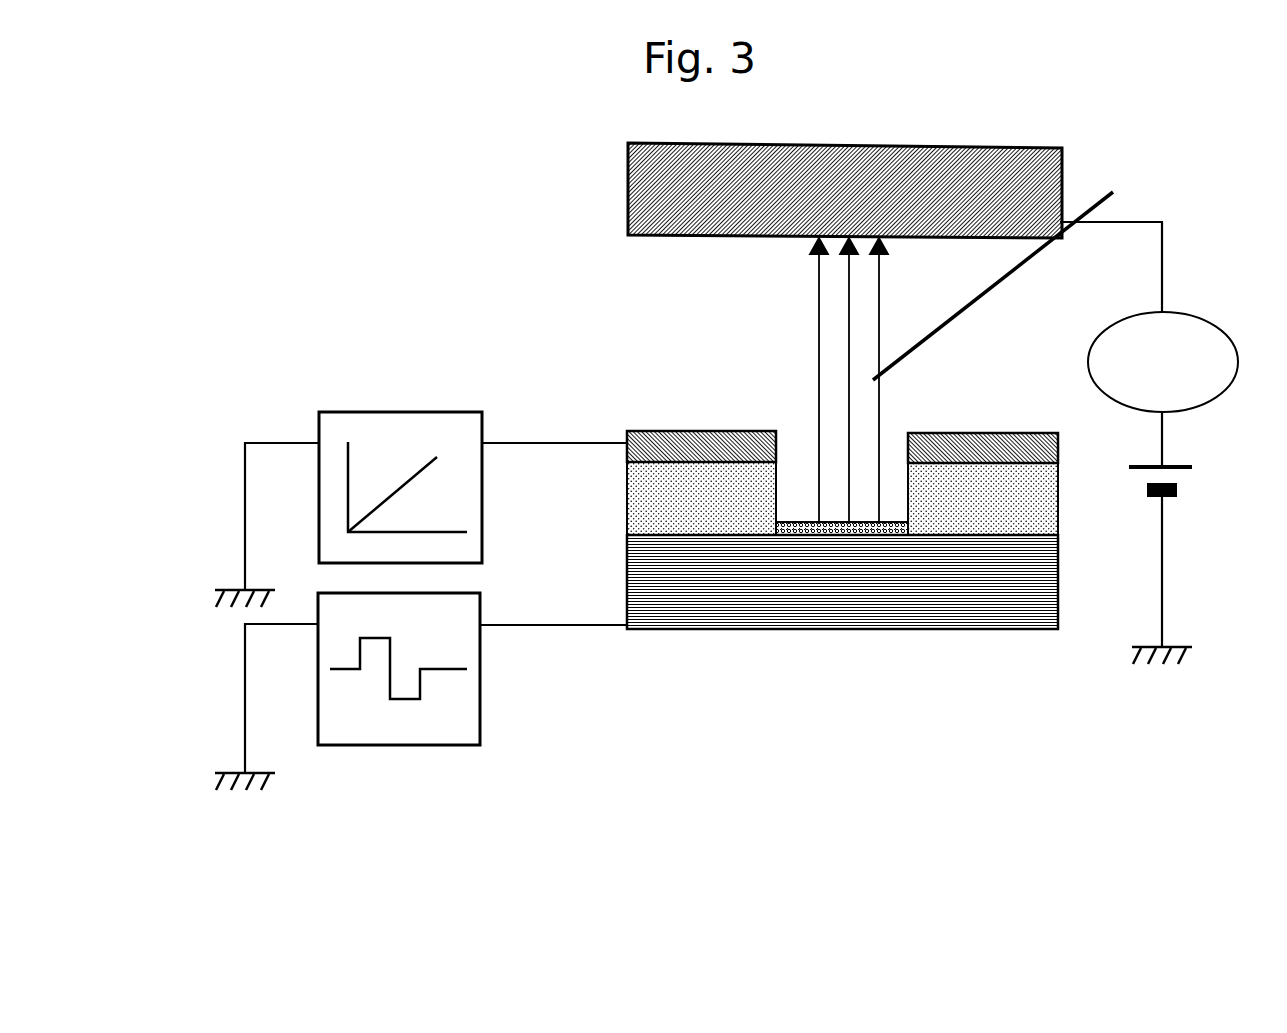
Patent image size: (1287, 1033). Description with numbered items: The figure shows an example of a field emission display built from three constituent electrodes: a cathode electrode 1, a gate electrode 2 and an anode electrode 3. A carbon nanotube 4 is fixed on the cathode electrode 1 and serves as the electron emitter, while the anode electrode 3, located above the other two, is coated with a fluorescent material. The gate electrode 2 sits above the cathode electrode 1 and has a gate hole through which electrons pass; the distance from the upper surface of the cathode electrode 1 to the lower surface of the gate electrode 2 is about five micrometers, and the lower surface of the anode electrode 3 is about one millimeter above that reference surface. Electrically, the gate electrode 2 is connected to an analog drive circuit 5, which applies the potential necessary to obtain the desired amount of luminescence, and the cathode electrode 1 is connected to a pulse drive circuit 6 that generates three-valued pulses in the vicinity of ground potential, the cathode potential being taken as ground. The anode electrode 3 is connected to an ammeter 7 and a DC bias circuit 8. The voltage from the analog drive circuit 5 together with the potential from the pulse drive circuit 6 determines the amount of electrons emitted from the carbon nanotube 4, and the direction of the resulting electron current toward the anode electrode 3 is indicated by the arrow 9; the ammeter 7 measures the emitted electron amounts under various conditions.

The cathode electrode 1 is at (812, 590).
The gate electrode 2 is at (627, 440).
The anode electrode 3 is at (655, 230).
The carbon nanotube 4 is at (805, 522).
The analog drive circuit 5 is at (387, 423).
The pulse drive circuit 6 is at (473, 727).
The ammeter 7 is at (1213, 340).
The DC bias circuit 8 is at (1175, 495).
The arrow 9 is at (1021, 273).